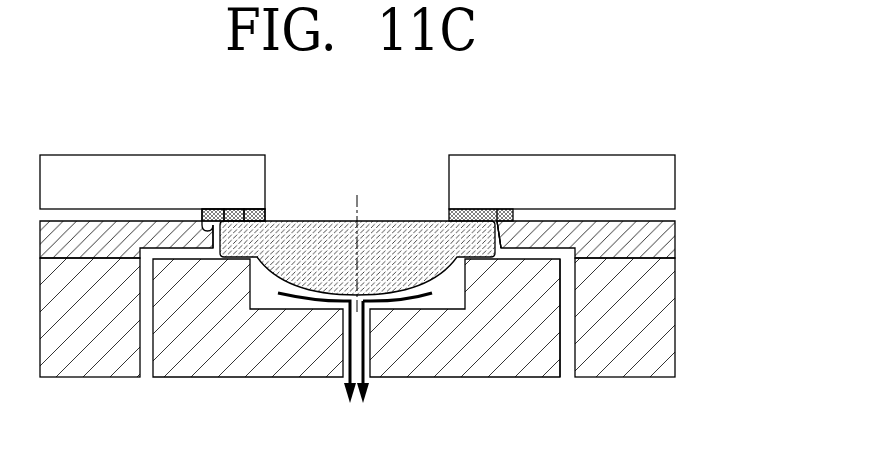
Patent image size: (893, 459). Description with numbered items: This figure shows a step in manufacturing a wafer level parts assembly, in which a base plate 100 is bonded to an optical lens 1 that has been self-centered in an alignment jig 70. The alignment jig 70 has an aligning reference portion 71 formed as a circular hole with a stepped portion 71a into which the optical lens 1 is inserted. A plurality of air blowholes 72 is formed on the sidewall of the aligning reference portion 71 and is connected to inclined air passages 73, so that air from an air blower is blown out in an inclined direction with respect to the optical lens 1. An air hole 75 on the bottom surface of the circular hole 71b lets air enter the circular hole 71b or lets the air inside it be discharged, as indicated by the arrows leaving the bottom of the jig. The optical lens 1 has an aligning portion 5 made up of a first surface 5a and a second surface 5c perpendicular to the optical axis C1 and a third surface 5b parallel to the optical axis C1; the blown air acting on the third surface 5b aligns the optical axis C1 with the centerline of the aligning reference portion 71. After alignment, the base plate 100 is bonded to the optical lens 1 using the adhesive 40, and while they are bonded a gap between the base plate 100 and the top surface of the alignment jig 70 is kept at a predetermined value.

The optical lens 1 is at (403, 203).
The aligning portion 5 is at (231, 139).
The first surface 5a is at (245, 210).
The third surface 5b is at (205, 210).
The second surface 5c is at (235, 210).
The adhesive 40 is at (465, 210).
The alignment jig 70 is at (401, 260).
The aligning reference portion 71 is at (498, 222).
The stepped portion 71a is at (477, 260).
The circular hole 71b is at (271, 300).
The air blowholes 72 is at (495, 260).
The air passages 73 is at (530, 260).
The air hole 75 is at (368, 342).
The base plate 100 is at (697, 158).
The optical axis C1 is at (353, 213).